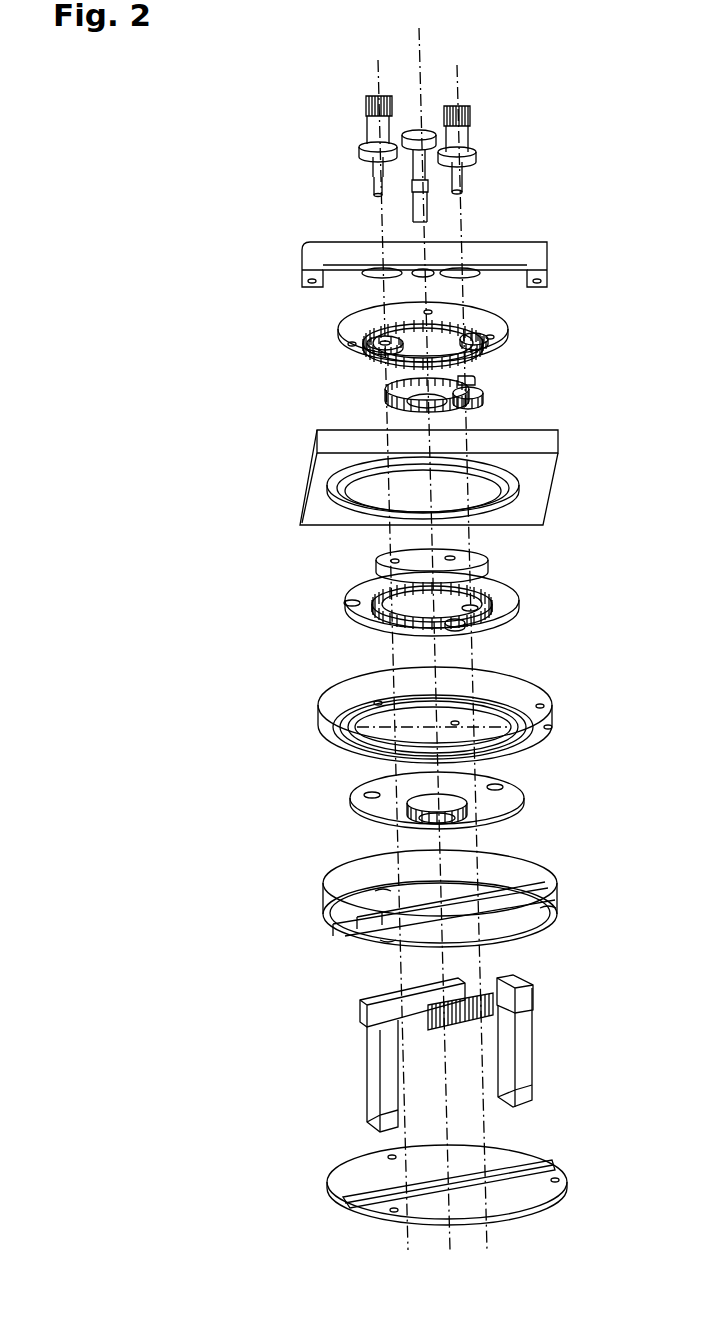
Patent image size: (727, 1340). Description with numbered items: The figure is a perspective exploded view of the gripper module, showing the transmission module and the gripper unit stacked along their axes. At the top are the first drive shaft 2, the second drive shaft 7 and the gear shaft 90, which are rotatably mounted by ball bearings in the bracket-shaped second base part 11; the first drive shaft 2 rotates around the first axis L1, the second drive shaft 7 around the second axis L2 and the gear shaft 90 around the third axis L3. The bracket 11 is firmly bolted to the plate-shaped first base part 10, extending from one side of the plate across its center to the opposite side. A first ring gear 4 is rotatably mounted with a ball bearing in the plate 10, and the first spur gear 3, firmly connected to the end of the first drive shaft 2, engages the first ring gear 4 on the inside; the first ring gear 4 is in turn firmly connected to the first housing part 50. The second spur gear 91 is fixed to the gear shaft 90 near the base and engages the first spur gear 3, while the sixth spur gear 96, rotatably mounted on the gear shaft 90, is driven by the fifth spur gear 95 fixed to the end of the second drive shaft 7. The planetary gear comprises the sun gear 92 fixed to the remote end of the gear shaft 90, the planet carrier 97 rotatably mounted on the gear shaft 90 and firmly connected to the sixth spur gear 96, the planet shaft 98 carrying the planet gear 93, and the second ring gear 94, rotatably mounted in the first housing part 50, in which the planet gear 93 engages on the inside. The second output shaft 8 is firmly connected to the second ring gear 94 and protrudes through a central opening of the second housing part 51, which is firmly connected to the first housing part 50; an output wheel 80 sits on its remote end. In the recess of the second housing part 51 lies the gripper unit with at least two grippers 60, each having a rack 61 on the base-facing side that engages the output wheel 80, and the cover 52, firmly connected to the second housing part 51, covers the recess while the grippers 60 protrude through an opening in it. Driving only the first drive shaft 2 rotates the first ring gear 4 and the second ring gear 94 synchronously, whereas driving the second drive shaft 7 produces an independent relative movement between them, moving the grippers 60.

The first axis L1 is at (376, 66).
The second axis L2 is at (460, 66).
The third axis L3 is at (421, 33).
The first drive shaft 2 is at (380, 130).
The second drive shaft 7 is at (461, 130).
The gear shaft 90 is at (428, 216).
The second base part 11 is at (542, 255).
The first ring gear 4 is at (497, 322).
The first spur gear 3 is at (392, 344).
The second spur gear 91 is at (474, 340).
The sixth spur gear 96 is at (406, 398).
The fifth spur gear 95 is at (476, 399).
The first base part 10 is at (540, 470).
The planet carrier 97 is at (485, 562).
The second ring gear 94 is at (360, 592).
The sun gear 92 is at (385, 605).
The planet gear 93 is at (478, 608).
The planet shaft 98 is at (460, 623).
The first housing part 50 is at (545, 708).
The second output shaft 8 is at (505, 800).
The output wheel 80 is at (411, 813).
The second housing part 51 is at (548, 891).
The rack 61 is at (362, 1008).
The gripper 60 is at (374, 1085).
The cover 52 is at (540, 1194).